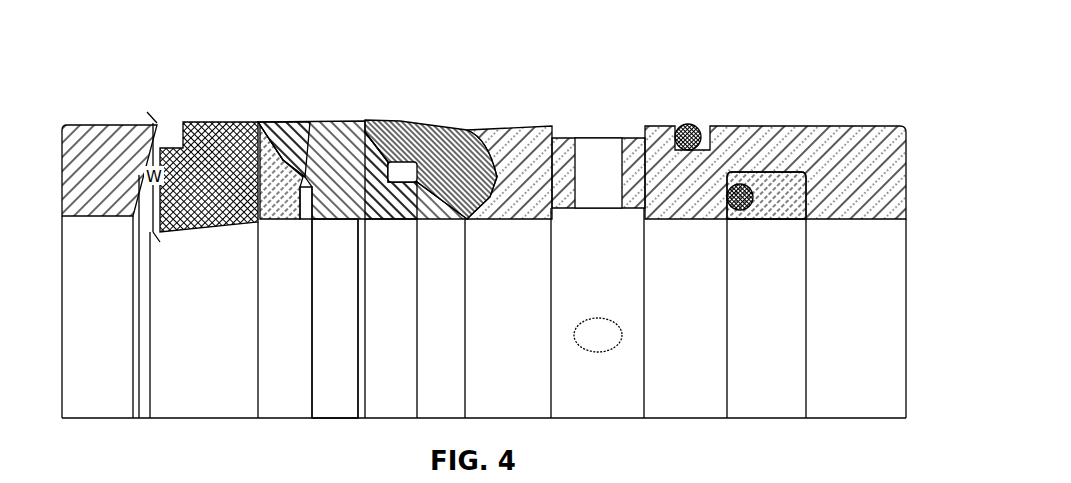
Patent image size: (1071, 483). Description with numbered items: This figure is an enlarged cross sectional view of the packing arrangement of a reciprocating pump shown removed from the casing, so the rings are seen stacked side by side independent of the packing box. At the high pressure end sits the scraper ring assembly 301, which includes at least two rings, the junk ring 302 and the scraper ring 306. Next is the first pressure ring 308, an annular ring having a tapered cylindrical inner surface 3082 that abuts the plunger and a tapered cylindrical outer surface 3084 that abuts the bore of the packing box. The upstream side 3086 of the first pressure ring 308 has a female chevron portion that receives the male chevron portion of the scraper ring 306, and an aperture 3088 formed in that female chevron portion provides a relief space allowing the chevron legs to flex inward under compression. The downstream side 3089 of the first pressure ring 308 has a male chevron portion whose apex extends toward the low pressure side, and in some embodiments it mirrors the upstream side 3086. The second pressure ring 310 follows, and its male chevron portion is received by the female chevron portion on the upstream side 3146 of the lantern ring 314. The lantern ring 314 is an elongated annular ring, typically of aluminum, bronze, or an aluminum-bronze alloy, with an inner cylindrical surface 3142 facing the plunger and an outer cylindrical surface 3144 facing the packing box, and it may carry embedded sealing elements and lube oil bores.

The scraper ring assembly 301 is at (62, 63).
The junk ring 302 is at (106, 150).
The scraper ring 306 is at (217, 148).
The first pressure ring 308 is at (328, 133).
The tapered cylindrical inner surface 3082 is at (331, 336).
The tapered cylindrical outer surface 3084 is at (277, 118).
The upstream side 3086 is at (270, 147).
The aperture 3088 is at (306, 180).
The downstream side 3089 is at (375, 205).
The second pressure ring 310 is at (423, 130).
The lantern ring 314 is at (675, 251).
The inner cylindrical surface 3142 is at (673, 350).
The outer cylindrical surface 3144 is at (662, 125).
The upstream side 3146 is at (486, 135).